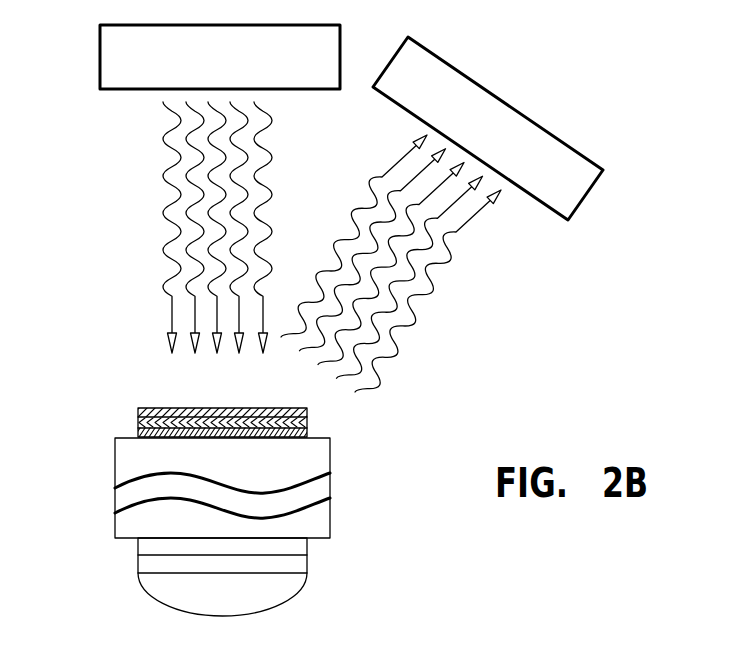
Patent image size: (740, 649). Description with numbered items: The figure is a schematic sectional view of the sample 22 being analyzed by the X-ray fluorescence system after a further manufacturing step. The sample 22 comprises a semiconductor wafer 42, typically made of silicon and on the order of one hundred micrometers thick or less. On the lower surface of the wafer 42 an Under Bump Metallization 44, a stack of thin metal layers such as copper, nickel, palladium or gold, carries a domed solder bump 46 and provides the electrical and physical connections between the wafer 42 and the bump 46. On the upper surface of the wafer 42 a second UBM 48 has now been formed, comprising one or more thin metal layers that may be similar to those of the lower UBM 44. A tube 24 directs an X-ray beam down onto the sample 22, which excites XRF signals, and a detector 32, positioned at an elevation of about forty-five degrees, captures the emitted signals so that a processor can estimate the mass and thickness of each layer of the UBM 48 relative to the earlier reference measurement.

The sample 22 is at (220, 513).
The tube 24 is at (100, 68).
The detector 32 is at (587, 198).
The semiconductor wafer 42 is at (331, 505).
The Under Bump Metallization 44 is at (307, 547).
The solder bump 46 is at (287, 598).
The UBM 48 is at (333, 403).